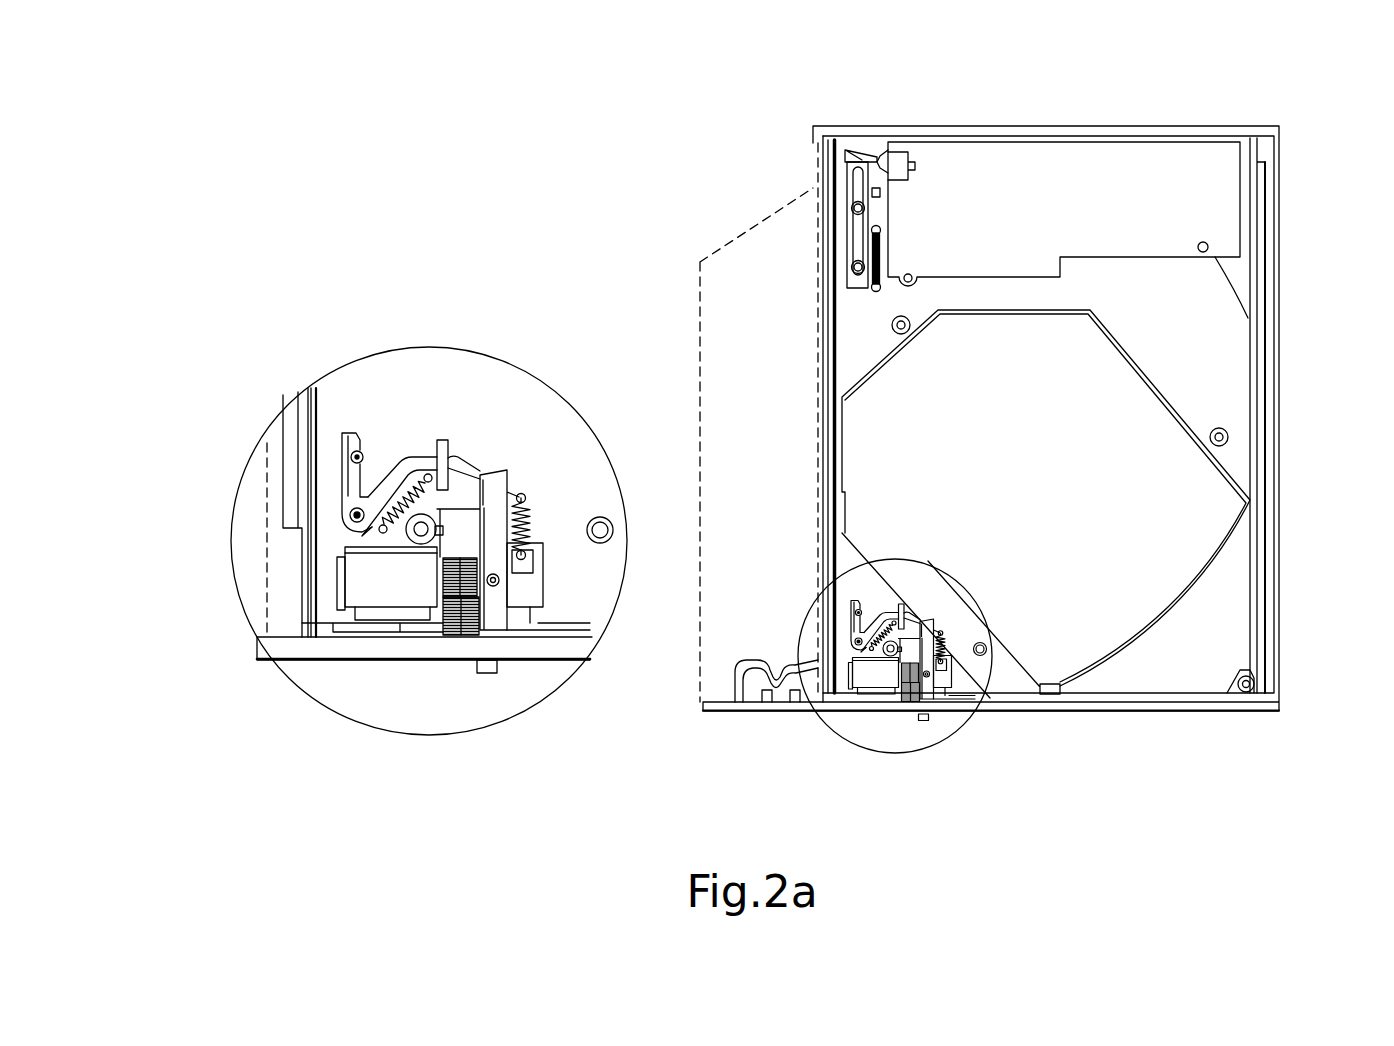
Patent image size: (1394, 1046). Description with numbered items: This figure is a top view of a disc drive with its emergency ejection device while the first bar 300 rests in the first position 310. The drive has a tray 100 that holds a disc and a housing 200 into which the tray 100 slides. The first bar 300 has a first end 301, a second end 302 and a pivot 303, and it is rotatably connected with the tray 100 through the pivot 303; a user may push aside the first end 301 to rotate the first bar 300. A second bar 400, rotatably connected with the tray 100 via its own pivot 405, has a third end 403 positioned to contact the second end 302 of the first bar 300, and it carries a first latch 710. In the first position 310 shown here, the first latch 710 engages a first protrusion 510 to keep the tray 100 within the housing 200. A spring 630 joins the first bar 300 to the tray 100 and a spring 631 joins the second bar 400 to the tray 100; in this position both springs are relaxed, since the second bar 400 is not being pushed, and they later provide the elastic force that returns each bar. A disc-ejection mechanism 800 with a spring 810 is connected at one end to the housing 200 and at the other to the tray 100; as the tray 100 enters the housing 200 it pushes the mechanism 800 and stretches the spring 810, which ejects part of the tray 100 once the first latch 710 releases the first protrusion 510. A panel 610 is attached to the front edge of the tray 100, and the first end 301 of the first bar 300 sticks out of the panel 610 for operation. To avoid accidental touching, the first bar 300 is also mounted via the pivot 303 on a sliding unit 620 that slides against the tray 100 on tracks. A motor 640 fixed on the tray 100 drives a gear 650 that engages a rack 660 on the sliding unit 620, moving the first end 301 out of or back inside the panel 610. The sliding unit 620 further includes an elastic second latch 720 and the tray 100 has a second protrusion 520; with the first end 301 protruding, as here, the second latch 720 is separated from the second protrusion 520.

The tray 100 is at (1245, 640).
The housing 200 is at (1280, 528).
The first bar 300 is at (493, 620).
The first end 301 is at (488, 668).
The second end 302 is at (463, 462).
The pivot 303 is at (500, 583).
The first position 310 is at (495, 482).
The second bar 400 is at (395, 472).
The third end 403 is at (439, 437).
The pivot 405 is at (350, 514).
The first protrusion 510 is at (353, 456).
The second protrusion 520 is at (613, 537).
The panel 610 is at (315, 652).
The sliding unit 620 is at (455, 533).
The spring 630 is at (530, 523).
The spring 631 is at (383, 530).
The motor 640 is at (350, 592).
The gear 650 is at (457, 585).
The rack 660 is at (463, 625).
The first latch 710 is at (340, 432).
The second latch 720 is at (538, 570).
The disc-ejection mechanism 800 is at (866, 170).
The spring 810 is at (879, 253).